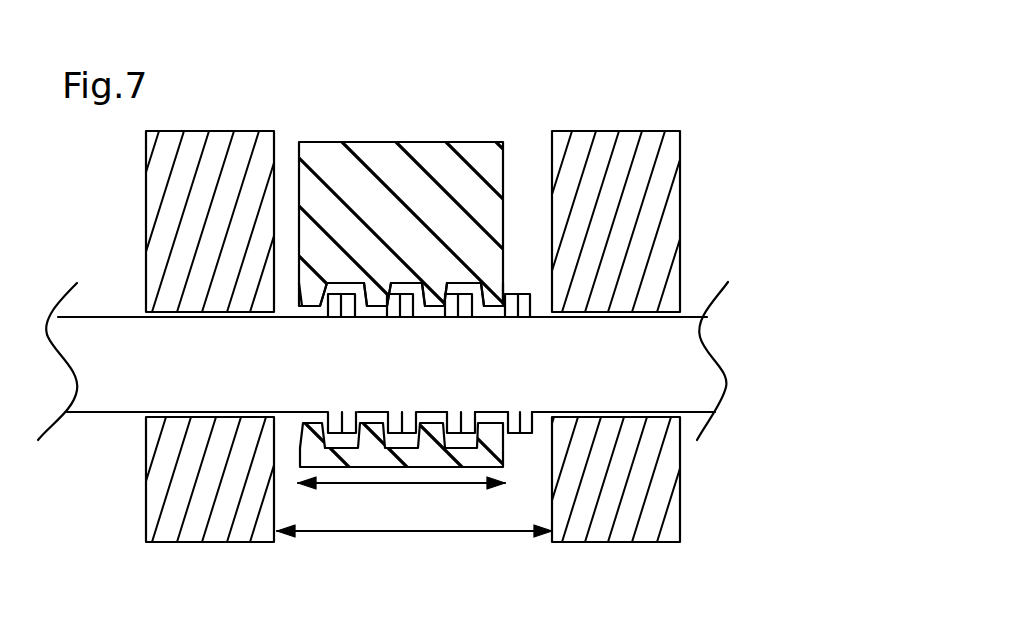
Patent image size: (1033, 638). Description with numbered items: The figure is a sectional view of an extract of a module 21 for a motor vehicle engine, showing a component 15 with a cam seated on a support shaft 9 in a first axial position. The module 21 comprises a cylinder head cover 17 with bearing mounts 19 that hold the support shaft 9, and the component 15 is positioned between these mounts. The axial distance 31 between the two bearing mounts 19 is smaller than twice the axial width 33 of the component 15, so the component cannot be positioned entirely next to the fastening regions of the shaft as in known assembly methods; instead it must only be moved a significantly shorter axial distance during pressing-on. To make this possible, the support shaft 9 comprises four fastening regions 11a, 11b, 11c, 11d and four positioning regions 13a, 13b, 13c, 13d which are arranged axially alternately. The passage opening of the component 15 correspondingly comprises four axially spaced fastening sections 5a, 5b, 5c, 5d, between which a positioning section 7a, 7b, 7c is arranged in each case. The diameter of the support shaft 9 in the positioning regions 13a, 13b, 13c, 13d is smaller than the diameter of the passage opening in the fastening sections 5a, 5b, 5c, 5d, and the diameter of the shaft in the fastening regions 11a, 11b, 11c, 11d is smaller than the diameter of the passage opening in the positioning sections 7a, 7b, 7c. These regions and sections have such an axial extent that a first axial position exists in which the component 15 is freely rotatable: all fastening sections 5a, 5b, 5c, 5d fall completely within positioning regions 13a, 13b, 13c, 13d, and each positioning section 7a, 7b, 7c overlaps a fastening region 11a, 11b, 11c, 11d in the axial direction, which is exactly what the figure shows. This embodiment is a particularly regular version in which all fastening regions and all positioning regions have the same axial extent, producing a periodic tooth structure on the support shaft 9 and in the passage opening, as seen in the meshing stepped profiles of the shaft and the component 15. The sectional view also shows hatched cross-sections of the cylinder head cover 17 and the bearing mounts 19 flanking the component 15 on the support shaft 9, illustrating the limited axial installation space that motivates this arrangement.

The module 21 is at (367, 238).
The cylinder head cover 17 is at (155, 202).
The seal member 15 is at (300, 297).
The bearing mounts 19 is at (627, 312).
The support shaft 9 is at (688, 365).
The fastening section 5a is at (308, 305).
The fastening section 5b is at (372, 305).
The fastening section 5c is at (432, 305).
The fastening section 5d is at (492, 305).
The positioning section 7a is at (345, 296).
The positioning section 7b is at (402, 297).
The positioning section 7c is at (458, 297).
The fastening region 11a is at (340, 322).
The fastening region 11b is at (397, 320).
The fastening region 11c is at (455, 320).
The fastening region 11d is at (513, 318).
The positioning region 13a is at (328, 320).
The positioning region 13b is at (363, 320).
The positioning region 13c is at (422, 320).
The positioning region 13d is at (483, 320).
The axial distance 31 is at (383, 531).
The axial width 33 is at (395, 485).